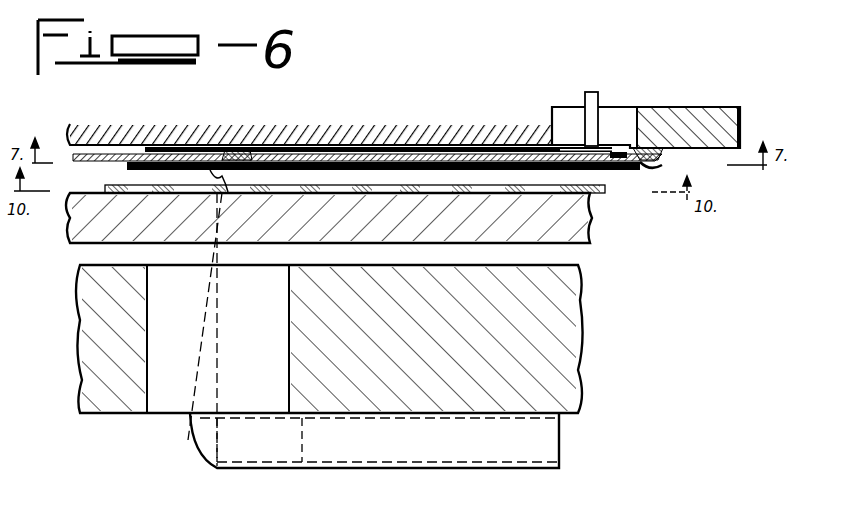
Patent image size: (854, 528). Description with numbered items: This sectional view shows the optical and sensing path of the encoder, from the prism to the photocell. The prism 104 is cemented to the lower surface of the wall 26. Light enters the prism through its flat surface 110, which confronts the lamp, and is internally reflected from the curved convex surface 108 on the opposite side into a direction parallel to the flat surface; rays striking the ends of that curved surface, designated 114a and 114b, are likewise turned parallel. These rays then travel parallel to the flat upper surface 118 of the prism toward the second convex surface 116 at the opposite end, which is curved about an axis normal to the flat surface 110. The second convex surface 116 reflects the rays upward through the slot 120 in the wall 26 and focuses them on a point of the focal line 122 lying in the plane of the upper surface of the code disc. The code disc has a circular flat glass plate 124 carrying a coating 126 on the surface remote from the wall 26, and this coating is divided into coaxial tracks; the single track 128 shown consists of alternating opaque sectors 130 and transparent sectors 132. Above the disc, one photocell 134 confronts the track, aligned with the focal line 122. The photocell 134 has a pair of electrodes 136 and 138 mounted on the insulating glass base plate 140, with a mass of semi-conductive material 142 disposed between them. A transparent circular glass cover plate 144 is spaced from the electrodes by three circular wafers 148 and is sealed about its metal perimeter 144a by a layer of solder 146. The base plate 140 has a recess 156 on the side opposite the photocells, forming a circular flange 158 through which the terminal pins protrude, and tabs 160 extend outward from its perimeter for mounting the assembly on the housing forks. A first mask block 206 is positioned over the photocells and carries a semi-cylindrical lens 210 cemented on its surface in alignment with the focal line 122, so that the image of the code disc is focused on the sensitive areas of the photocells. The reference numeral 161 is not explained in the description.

The wall 26 is at (572, 350).
The prism 104 is at (503, 448).
The convex surface 108 is at (540, 448).
The flat surface 110 is at (438, 462).
The ray 114a is at (395, 413).
The ray 114b is at (330, 470).
The second convex surface 116 is at (196, 452).
The surface of the prism 118 is at (503, 413).
The slot 120 is at (290, 318).
The focal line 122 is at (210, 196).
The glass plate 124 is at (594, 236).
The coating 126 is at (563, 185).
The track 128 is at (600, 208).
The opaque sectors 130 is at (328, 196).
The transparent sectors 132 is at (438, 196).
The photocell 134 is at (177, 149).
The electrode 136 is at (300, 160).
The electrode 138 is at (160, 125).
The base plate 140 is at (350, 127).
The mass of semi-conductive material 142 is at (244, 154).
The transparent cover plate 144 is at (378, 170).
The metal perimeter 144a is at (652, 170).
The layer of solder 146 is at (696, 163).
The circular wafers 148 is at (465, 170).
The recess 156 is at (552, 110).
The circular flange 158 is at (622, 118).
The tabs 160 is at (715, 108).
The transition region 161 is at (400, 127).
The first mask block 206 is at (135, 185).
The semi-cylindrical lens 210 is at (230, 170).